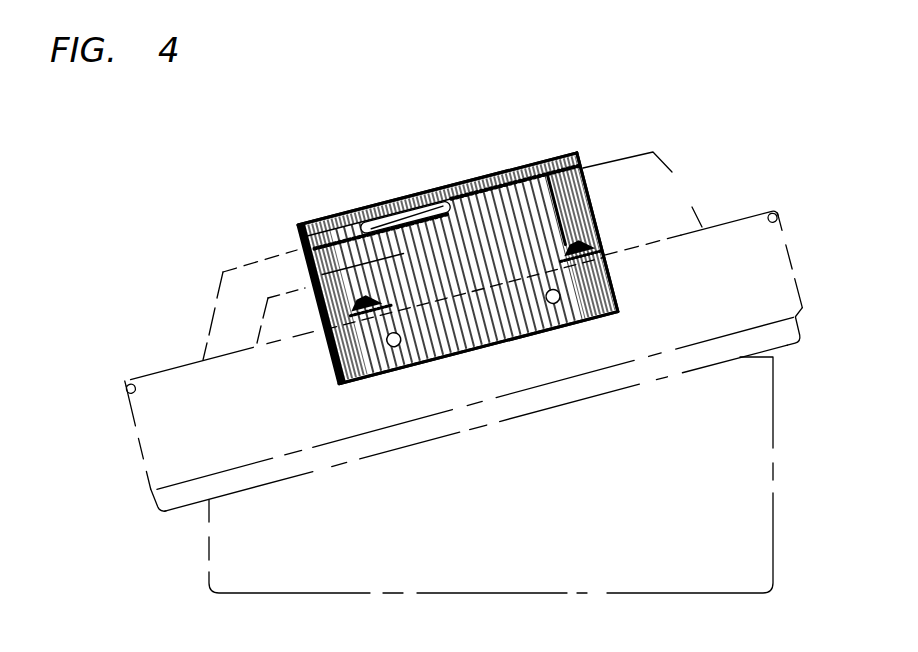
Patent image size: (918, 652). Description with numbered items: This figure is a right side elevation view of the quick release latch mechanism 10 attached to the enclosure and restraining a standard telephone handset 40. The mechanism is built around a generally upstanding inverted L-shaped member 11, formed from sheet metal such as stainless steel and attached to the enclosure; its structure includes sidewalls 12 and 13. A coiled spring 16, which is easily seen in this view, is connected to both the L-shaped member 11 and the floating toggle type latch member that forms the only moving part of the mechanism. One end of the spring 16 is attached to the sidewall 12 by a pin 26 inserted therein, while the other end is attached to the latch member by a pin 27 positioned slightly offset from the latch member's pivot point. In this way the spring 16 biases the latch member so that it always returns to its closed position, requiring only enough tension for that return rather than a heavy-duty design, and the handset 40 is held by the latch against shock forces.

The quick release latch mechanism 10 is at (433, 187).
The inverted L-shaped member 11 is at (343, 214).
The sidewall 12 is at (297, 233).
The sidewall 13 is at (585, 163).
The coiled spring 16 is at (414, 246).
The pin 26 is at (330, 337).
The pin 27 is at (447, 206).
The telephone handset 40 is at (686, 198).